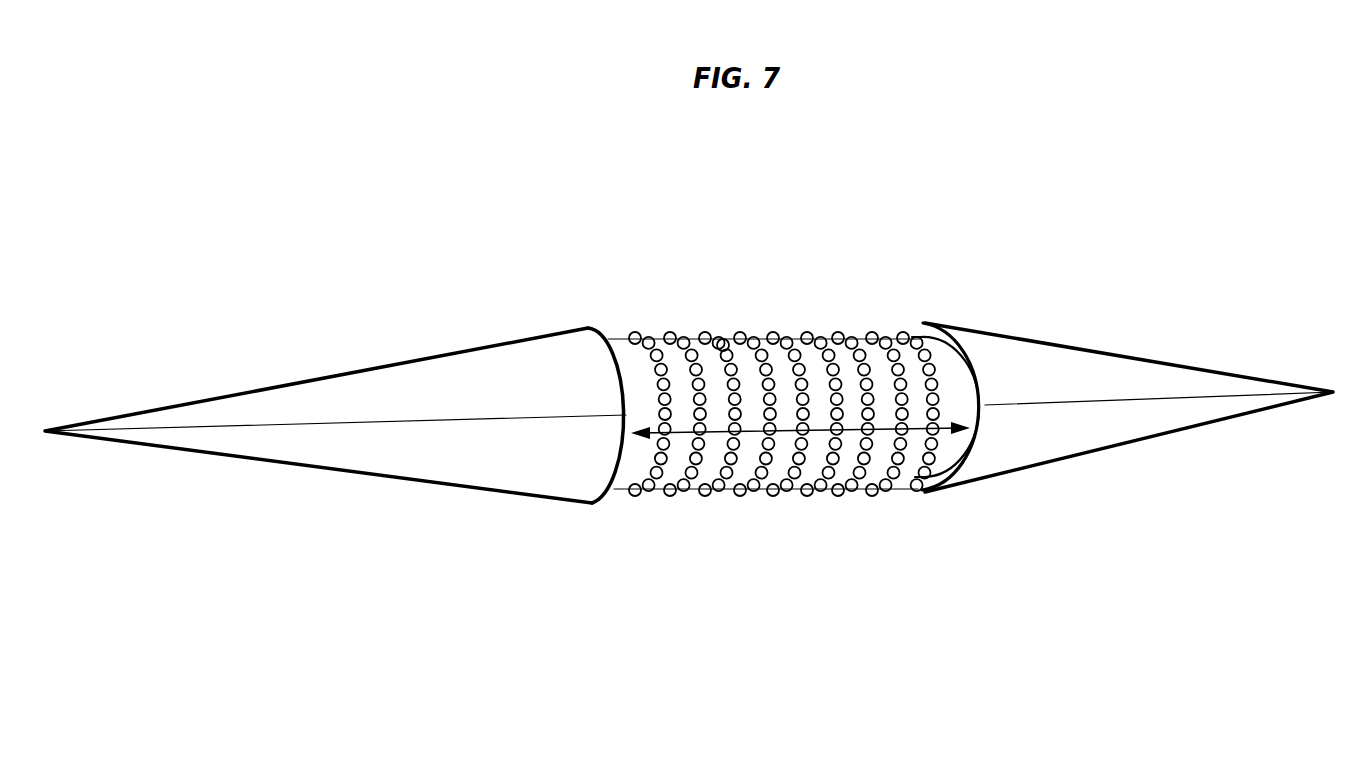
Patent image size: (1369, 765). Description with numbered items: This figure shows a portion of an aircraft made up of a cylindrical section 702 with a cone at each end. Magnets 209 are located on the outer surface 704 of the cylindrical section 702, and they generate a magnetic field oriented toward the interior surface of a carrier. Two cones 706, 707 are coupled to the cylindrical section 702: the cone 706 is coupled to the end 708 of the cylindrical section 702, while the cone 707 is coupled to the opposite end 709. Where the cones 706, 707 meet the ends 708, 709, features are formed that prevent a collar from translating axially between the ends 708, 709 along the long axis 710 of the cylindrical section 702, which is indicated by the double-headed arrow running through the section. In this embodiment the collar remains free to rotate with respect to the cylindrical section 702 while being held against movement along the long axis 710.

The magnets 209 is at (723, 345).
The cylindrical section 702 is at (930, 490).
The outer surface 704 is at (792, 345).
The cone 706 is at (378, 386).
The cone 707 is at (1092, 368).
The end 708 is at (607, 333).
The end 709 is at (933, 322).
The long axis 710 is at (928, 432).